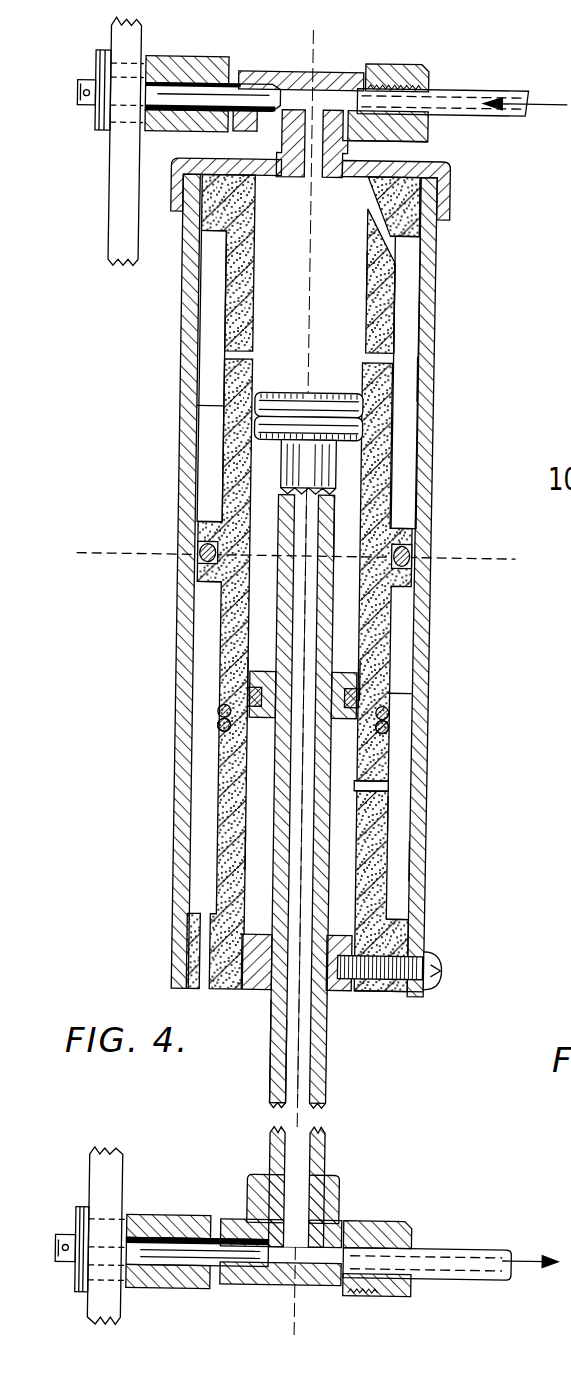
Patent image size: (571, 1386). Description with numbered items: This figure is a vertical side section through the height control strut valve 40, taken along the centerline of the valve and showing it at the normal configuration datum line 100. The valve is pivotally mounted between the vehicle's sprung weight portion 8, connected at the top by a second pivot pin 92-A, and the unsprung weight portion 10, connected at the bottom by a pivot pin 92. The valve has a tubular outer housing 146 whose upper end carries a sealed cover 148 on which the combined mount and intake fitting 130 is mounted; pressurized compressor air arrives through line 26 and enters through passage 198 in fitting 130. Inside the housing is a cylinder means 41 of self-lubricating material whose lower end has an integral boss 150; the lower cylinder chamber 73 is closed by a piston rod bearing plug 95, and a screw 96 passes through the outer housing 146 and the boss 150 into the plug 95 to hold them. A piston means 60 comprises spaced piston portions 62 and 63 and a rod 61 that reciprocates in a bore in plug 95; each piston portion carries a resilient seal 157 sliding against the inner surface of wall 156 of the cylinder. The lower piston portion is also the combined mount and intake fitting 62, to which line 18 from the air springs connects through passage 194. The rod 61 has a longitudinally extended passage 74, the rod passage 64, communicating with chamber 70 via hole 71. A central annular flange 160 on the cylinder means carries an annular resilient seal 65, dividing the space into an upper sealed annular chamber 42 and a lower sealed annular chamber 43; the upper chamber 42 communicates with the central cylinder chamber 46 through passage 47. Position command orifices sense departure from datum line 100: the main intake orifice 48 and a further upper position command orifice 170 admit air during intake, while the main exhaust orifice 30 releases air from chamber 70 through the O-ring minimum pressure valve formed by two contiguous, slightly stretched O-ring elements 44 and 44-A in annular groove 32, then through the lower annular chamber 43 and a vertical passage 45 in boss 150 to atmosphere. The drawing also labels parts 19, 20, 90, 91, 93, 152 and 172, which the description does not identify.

The sprung weight portion 8 is at (108, 203).
The unsprung weight portion 10 is at (123, 1168).
The line 18 is at (470, 1245).
The conduit fitting 19 is at (395, 63).
The threaded coupling 20 is at (405, 77).
The line 26 is at (498, 95).
The main exhaust orifice 30 is at (392, 804).
The annular groove 32 is at (250, 694).
The height control strut valve 40 is at (183, 369).
The cylinder means 41 is at (223, 443).
The upper sealed annular chamber 42 is at (203, 497).
The lower sealed annular chamber 43 is at (235, 690).
The O-ring valve element 44 is at (220, 714).
The O-ring valve element 44-A is at (222, 730).
The vertical passage 45 is at (205, 952).
The central cylinder chamber 46 is at (367, 268).
The passage 47 is at (400, 198).
The main intake orifice 48 is at (400, 390).
The piston means 60 is at (326, 1084).
The piston rod 61 is at (275, 1038).
The combined mount and intake fitting 62 is at (279, 395).
The piston portion 63 is at (252, 676).
The rod passage 64 is at (318, 626).
The annular resilient seal 65 is at (413, 548).
The chamber 70 is at (257, 597).
The hole 71 is at (332, 556).
The lower cylinder chamber 73 is at (255, 851).
The longitudinally extended passage 74 is at (308, 1025).
The clamp block 90 is at (213, 28).
The bolt head 91 is at (95, 135).
The pivot pin 92 is at (210, 1268).
The second pivot pin 92-A is at (255, 90).
The nut and washer 93 is at (122, 65).
The piston rod bearing plug 95 is at (252, 992).
The screw 96 is at (440, 962).
The normal configuration datum line 100 is at (540, 523).
The combined mount and intake fitting 130 is at (342, 158).
The tubular outer housing 146 is at (418, 862).
The sealed cover 148 is at (410, 210).
The boss 150 is at (405, 918).
The housing bottom 152 is at (417, 995).
The wall 156 is at (392, 818).
The resilient seal 157 is at (183, 408).
The central annular flange 160 is at (205, 540).
The upper position command orifice 170 is at (400, 360).
The slot 172 is at (392, 793).
The passage 194 is at (320, 1258).
The passage 198 is at (313, 172).